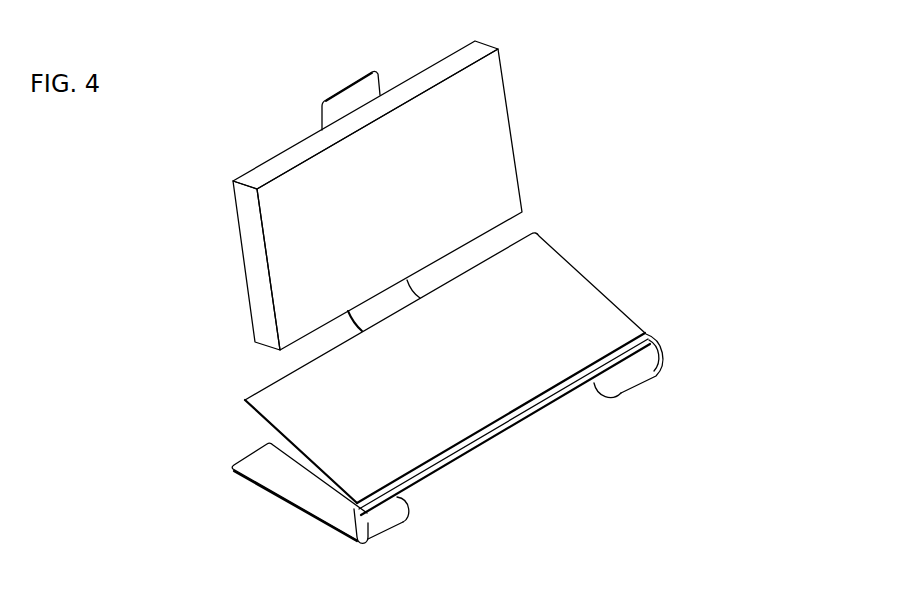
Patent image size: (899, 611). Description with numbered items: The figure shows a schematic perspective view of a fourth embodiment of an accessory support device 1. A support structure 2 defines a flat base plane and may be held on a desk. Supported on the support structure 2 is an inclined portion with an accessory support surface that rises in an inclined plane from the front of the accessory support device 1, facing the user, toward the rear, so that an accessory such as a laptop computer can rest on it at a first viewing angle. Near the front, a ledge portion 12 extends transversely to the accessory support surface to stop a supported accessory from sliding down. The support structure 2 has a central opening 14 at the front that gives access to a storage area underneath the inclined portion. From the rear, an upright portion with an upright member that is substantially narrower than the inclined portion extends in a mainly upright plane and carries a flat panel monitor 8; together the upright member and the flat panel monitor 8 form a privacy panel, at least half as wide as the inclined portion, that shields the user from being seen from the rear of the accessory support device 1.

The accessory support device 1 is at (143, 352).
The support structure 2 is at (303, 487).
The flat panel monitor 8 is at (472, 91).
The ledge portion 12 is at (650, 336).
The central opening 14 is at (490, 466).